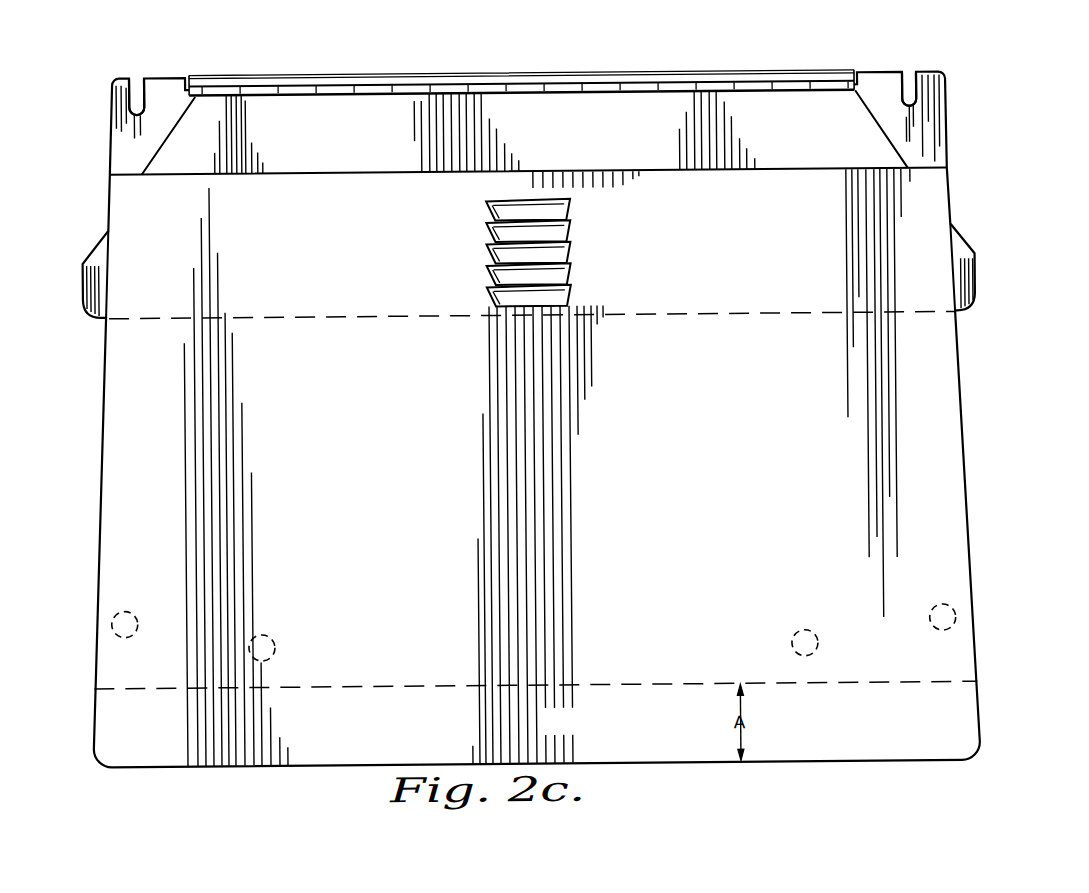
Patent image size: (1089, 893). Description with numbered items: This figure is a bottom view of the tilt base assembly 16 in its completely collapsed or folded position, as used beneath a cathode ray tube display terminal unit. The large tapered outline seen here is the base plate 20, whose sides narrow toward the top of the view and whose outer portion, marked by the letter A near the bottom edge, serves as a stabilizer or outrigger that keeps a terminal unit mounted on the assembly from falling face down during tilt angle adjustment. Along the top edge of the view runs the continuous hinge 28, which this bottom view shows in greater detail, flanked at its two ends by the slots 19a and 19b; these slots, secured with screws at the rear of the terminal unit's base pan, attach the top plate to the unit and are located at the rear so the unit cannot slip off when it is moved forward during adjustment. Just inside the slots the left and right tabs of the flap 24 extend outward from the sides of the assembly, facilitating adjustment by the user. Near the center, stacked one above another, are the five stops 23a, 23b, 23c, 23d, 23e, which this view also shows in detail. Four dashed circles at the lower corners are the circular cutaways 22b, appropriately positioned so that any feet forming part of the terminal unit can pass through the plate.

The tilt base assembly 16 is at (989, 381).
The slot 19a is at (146, 90).
The slot 19b is at (915, 90).
The base plate 20 is at (573, 731).
The circular cutaways 22b is at (935, 608).
The stop 23a is at (559, 299).
The stop 23b is at (559, 277).
The stop 23c is at (559, 256).
The stop 23d is at (559, 234).
The stop 23e is at (559, 212).
The flap 24 is at (896, 140).
The continuous hinge 28 is at (691, 83).